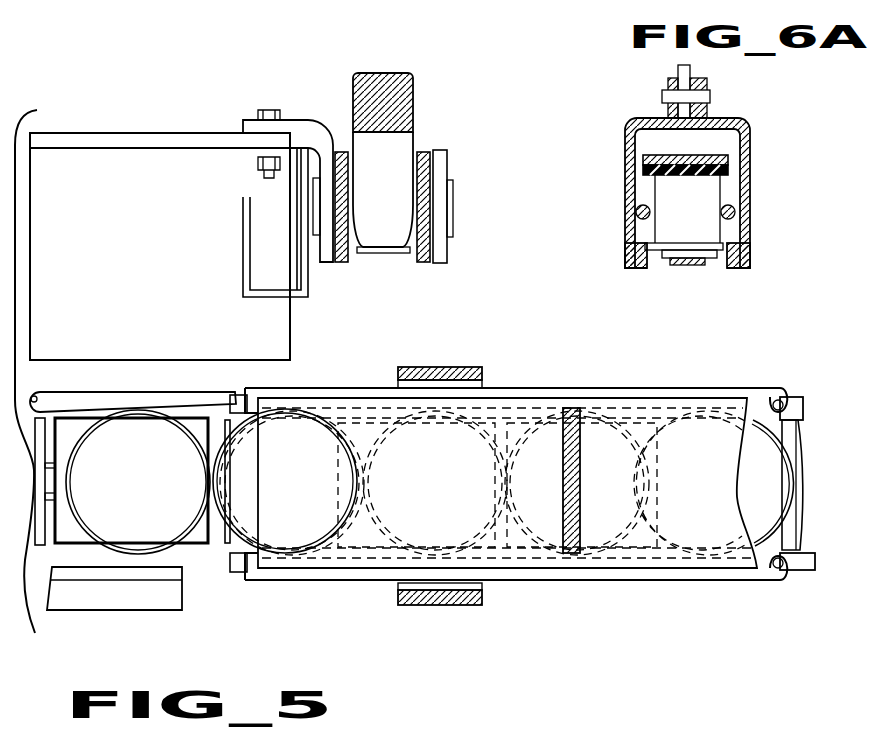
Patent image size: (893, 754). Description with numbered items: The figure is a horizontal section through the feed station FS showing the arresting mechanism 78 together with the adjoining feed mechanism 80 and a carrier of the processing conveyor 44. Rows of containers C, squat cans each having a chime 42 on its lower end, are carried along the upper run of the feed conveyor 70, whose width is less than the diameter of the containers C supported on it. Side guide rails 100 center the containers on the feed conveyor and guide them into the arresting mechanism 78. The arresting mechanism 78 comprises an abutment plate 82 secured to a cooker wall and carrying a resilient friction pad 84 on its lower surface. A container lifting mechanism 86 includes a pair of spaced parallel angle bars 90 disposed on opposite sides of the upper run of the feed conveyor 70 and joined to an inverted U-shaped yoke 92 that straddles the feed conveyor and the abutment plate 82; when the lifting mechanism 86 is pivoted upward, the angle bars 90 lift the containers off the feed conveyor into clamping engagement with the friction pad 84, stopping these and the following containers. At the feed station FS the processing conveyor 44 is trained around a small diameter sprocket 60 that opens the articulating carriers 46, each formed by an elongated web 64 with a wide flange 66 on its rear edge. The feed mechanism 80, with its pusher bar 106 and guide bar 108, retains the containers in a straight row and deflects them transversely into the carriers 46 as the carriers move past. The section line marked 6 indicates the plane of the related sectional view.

In FIG. 5, the section line 6- 6 is at (95, 553).
In FIG. 5, the chime 42 is at (236, 540).
In FIG. 5, the processing conveyor 44 is at (445, 162).
In FIG. 5, the articulating carrier 46 is at (118, 252).
In FIG. 5, the small diameter sprocket 60 is at (407, 92).
In FIG. 5, the elongated web 64 is at (290, 327).
In FIG. 5, the wide flange 66 is at (110, 135).
In FIG. 5, the feed conveyor 70 is at (810, 453).
In FIG. 6A, the feed conveyor 70 is at (694, 270).
In FIG. 5, the arresting mechanism 78 is at (652, 396).
In FIG. 6A, the arresting mechanism 78 is at (757, 146).
In FIG. 5, the feed mechanism 80 is at (190, 612).
In FIG. 5, the abutment plate 82 is at (612, 402).
In FIG. 6A, the abutment plate 82 is at (690, 155).
In FIG. 6A, the resilient friction pad 84 is at (731, 168).
In FIG. 5, the container lifting mechanism 86 is at (805, 395).
In FIG. 6A, the container lifting mechanism 86 is at (755, 245).
In FIG. 5, the angle bar 90 is at (803, 412).
In FIG. 6A, the angle bar 90 is at (646, 269).
In FIG. 5, the inverted U-shaped yoke 92 is at (422, 366).
In FIG. 6A, the inverted U-shaped yoke 92 is at (624, 179).
In FIG. 6A, the side guide rail 100 is at (724, 216).
In FIG. 5, the pusher bar 106 is at (108, 606).
In FIG. 5, the guide bar 108 is at (146, 390).
In FIG. 5, the container C is at (142, 493).
In FIG. 6A, the container C is at (694, 201).
In FIG. 5, the feed station FS is at (193, 388).